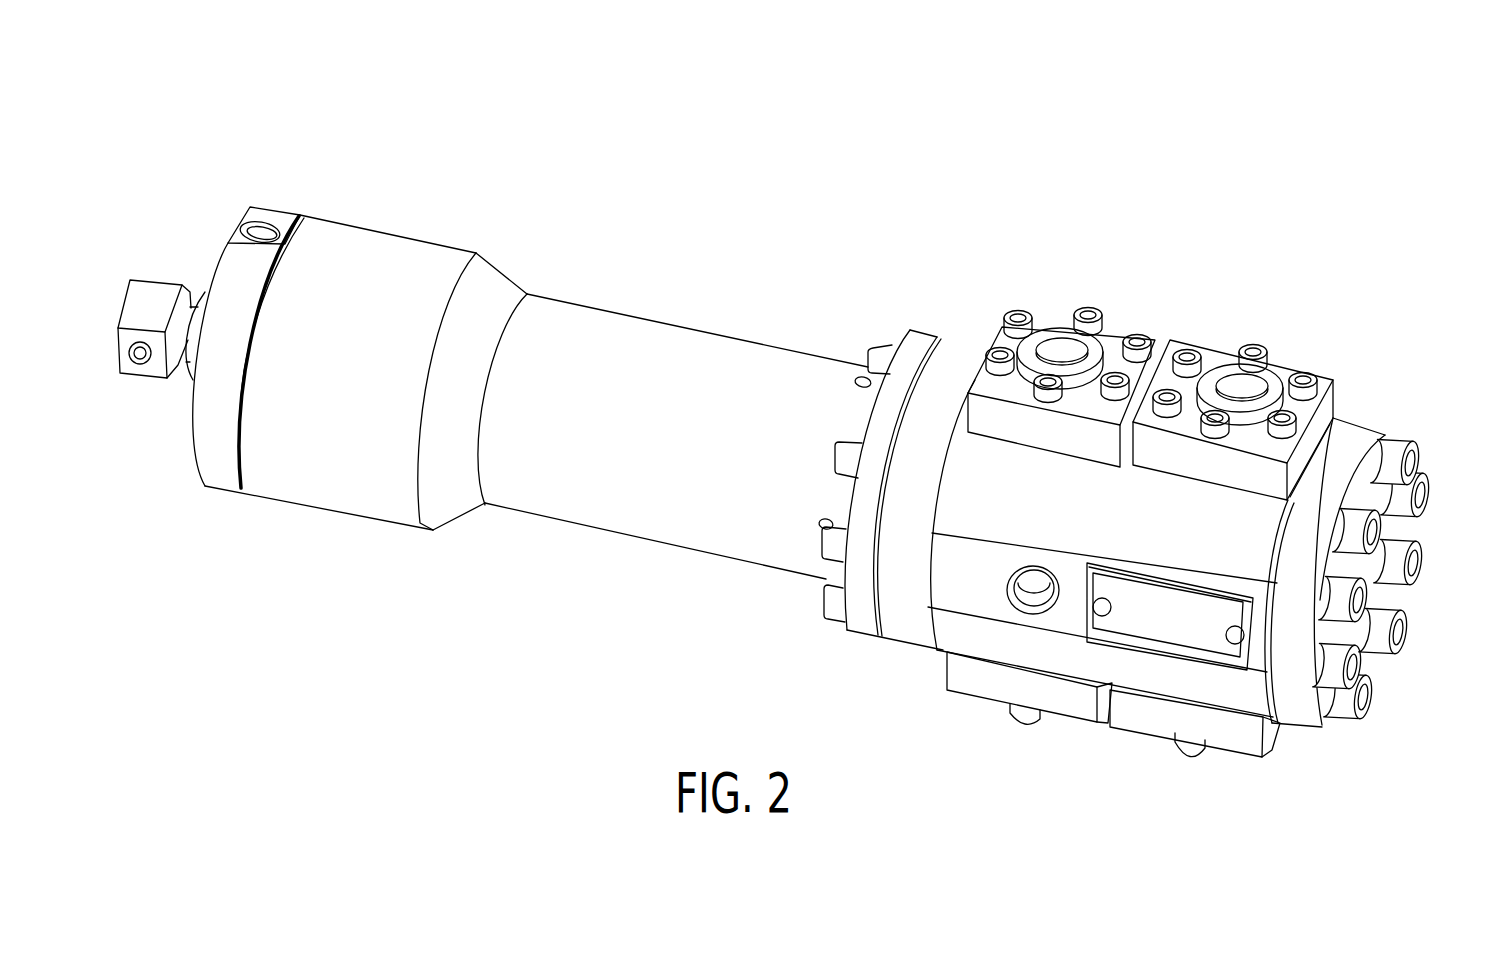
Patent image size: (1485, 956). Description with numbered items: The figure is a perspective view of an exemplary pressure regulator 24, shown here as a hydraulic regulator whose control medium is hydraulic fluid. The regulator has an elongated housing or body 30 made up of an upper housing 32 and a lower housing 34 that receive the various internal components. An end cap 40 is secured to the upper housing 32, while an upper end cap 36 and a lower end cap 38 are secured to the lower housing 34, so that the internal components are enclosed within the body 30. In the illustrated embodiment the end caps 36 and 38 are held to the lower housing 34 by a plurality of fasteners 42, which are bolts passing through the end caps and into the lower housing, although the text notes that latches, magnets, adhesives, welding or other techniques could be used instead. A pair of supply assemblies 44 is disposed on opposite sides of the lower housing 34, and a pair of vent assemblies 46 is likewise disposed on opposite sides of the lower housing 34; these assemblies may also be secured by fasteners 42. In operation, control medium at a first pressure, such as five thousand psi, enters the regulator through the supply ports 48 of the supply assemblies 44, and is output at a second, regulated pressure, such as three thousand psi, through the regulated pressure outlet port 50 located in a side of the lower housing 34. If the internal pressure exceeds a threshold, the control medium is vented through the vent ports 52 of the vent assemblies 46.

The pressure regulator 24 is at (510, 155).
The body 30 is at (818, 343).
The upper housing 32 is at (697, 345).
The lower housing 34 is at (943, 632).
The upper end cap 36 is at (963, 350).
The lower end cap 38 is at (1363, 434).
The end cap 40 is at (217, 467).
The fasteners 42 is at (1252, 345).
The supply assemblies 44 is at (1116, 319).
The vent assemblies 46 is at (1347, 363).
The supply ports 48 is at (1060, 350).
The regulated pressure outlet port 50 is at (1038, 580).
The vent ports 52 is at (1233, 387).